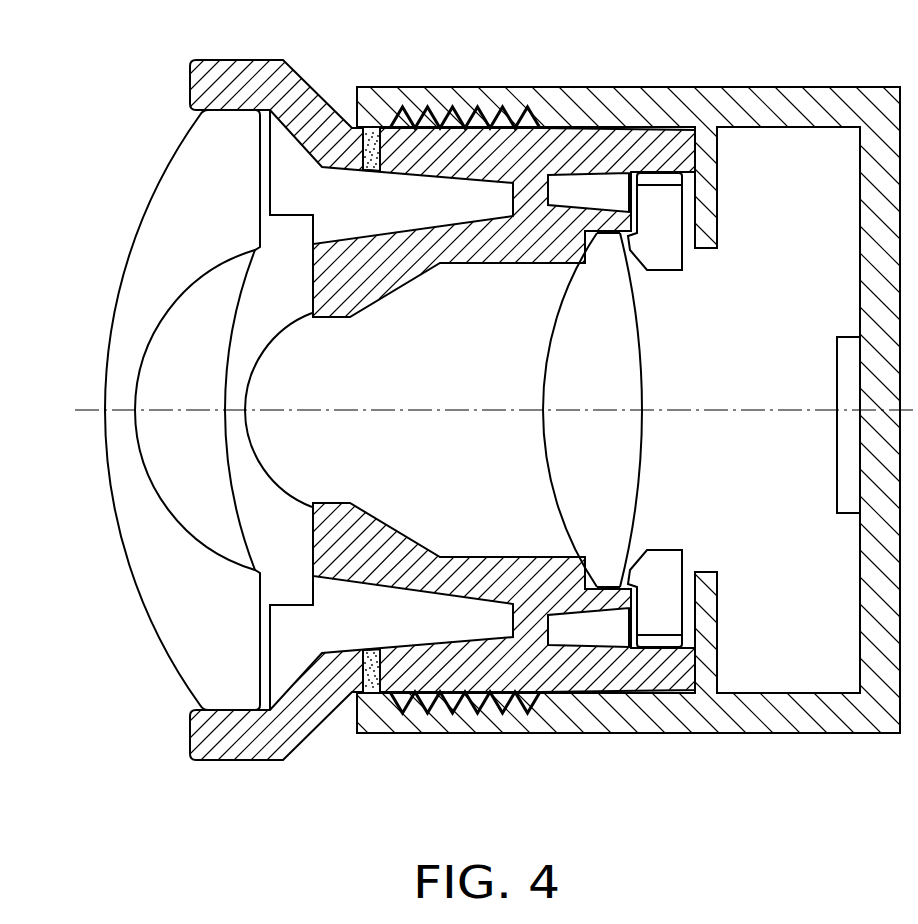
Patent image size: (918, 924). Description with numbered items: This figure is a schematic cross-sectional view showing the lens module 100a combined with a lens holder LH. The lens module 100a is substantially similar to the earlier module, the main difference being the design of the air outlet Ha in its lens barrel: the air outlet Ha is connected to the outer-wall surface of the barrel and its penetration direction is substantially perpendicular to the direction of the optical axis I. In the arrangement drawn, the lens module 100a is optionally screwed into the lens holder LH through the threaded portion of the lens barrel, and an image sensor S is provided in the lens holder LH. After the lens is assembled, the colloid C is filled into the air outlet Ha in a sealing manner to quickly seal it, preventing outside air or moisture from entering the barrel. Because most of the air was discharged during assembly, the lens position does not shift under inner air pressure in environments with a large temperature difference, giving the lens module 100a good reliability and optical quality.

The lens module 100a is at (155, 138).
The air outlet Ha is at (362, 146).
The colloid C is at (372, 140).
The lens holder LH is at (773, 96).
The image sensor S is at (843, 354).
The optical axis I is at (80, 408).